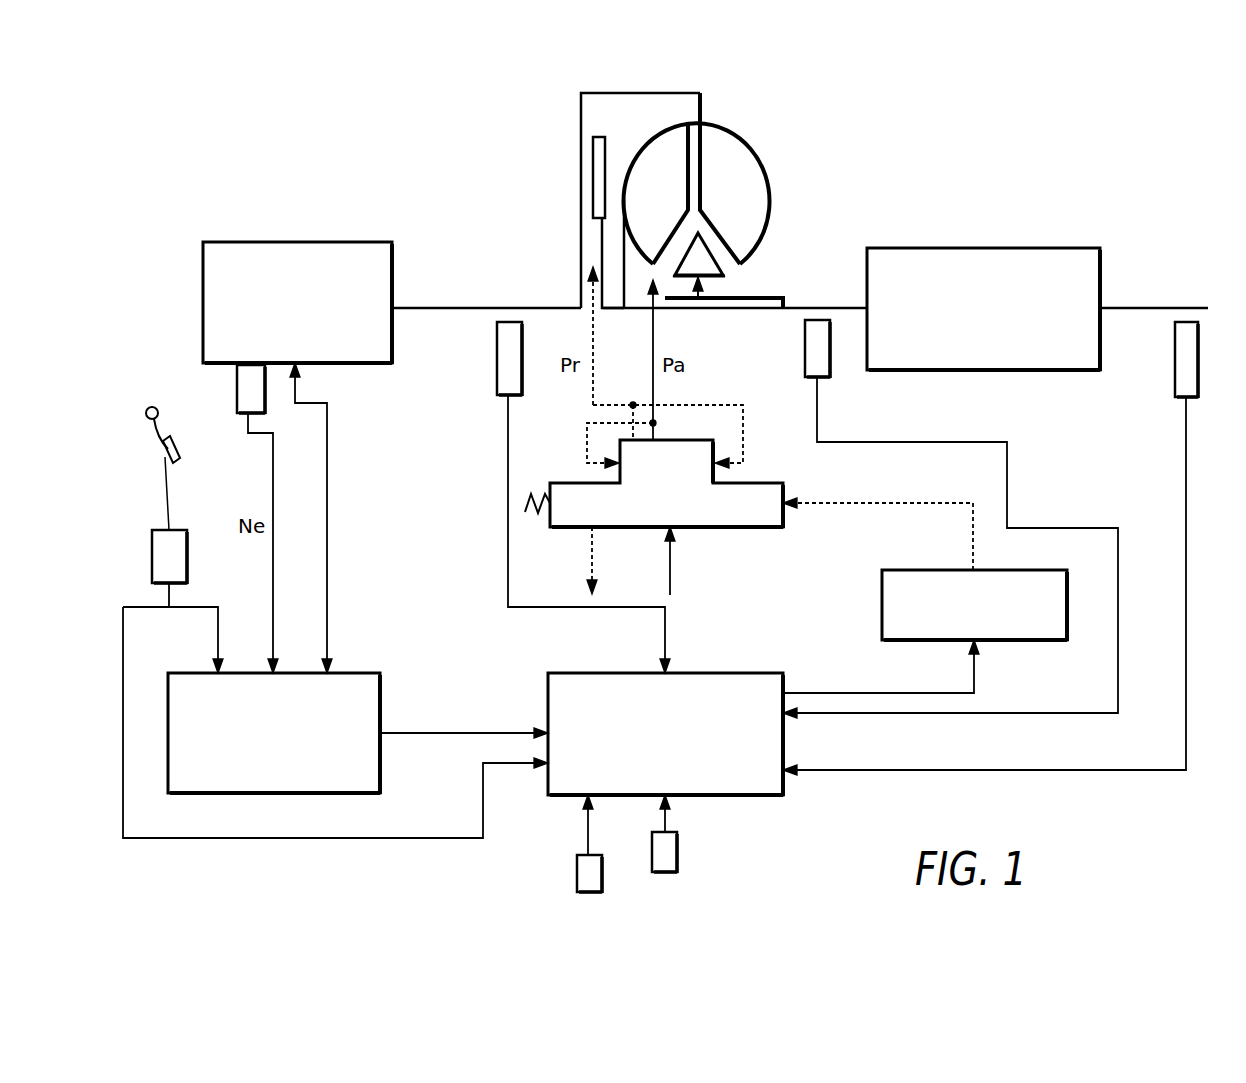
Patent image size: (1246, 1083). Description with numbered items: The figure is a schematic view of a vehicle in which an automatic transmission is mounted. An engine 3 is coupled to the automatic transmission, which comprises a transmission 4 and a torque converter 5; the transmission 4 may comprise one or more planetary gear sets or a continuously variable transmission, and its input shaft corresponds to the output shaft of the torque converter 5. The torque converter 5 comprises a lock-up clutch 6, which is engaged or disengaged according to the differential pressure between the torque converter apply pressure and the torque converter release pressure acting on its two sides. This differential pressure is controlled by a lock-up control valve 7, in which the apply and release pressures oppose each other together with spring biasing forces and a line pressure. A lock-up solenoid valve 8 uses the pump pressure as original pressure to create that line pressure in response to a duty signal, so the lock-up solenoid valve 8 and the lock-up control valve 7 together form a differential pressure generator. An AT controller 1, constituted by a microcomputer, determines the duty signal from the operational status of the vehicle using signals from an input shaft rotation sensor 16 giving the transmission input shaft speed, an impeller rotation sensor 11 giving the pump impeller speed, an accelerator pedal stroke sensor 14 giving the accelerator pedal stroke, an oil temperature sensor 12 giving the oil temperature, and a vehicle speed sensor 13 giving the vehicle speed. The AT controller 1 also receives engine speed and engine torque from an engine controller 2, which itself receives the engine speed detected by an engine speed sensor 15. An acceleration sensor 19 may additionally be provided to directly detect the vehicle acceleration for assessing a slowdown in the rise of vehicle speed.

The AT controller 1 is at (597, 680).
The engine controller 2 is at (203, 680).
The engine 3 is at (250, 257).
The transmission 4 is at (912, 259).
The torque converter 5 is at (758, 122).
The lock-up clutch 6 is at (598, 118).
The lock-up control valve 7 is at (764, 456).
The lock-up solenoid valve 8 is at (918, 574).
The impeller rotation sensor 11 is at (497, 368).
The oil temperature sensor 12 is at (577, 875).
The vehicle speed sensor 13 is at (1198, 358).
The accelerator pedal stroke sensor 14 is at (152, 560).
The engine speed sensor 15 is at (237, 380).
The input shaft rotation sensor 16 is at (805, 337).
The acceleration sensor 19 is at (677, 848).